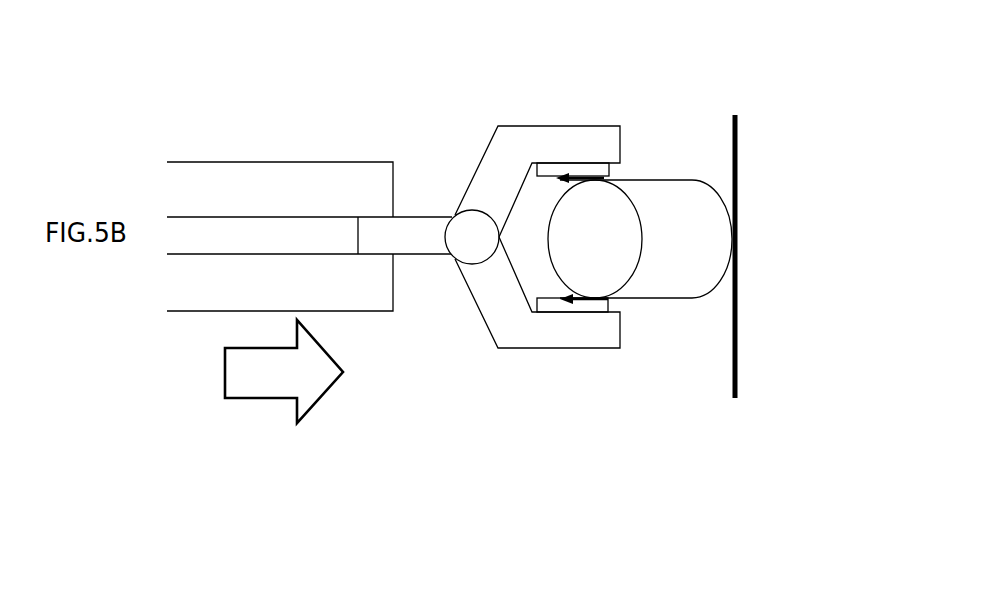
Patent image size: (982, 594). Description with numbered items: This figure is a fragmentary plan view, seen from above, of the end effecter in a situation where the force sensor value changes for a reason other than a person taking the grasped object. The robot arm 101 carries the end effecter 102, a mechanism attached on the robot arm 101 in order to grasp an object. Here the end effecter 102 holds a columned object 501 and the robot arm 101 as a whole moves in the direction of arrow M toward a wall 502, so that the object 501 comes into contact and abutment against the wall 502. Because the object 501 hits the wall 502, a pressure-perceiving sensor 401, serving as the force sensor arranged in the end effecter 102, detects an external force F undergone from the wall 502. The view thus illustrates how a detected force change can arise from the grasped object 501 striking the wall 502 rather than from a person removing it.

The robot arm 101 is at (222, 155).
The end effecter 102 is at (510, 126).
The pressure-perceiving sensor 401 is at (622, 230).
The columned object 501 is at (698, 210).
The wall 502 is at (736, 337).
The external force F is at (597, 300).
The direction of arrow M is at (260, 398).